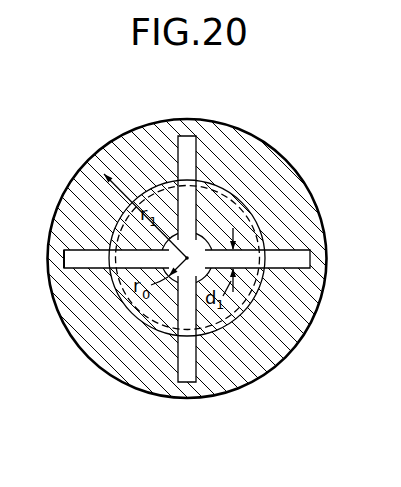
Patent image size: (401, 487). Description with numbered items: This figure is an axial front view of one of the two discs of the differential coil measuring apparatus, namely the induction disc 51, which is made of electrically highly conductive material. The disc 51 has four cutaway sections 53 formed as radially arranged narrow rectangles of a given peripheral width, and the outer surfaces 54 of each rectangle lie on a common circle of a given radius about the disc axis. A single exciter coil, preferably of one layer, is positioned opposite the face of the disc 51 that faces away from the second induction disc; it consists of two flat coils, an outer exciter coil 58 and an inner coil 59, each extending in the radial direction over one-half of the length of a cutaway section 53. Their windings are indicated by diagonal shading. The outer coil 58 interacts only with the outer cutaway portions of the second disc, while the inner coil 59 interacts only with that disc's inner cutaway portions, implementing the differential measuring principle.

The induction disc 51 is at (288, 172).
The cutaway sections 53 is at (83, 250).
The outer surfaces 54 is at (61, 258).
The outer exciter coil 58 is at (95, 321).
The inner coil 59 is at (220, 206).